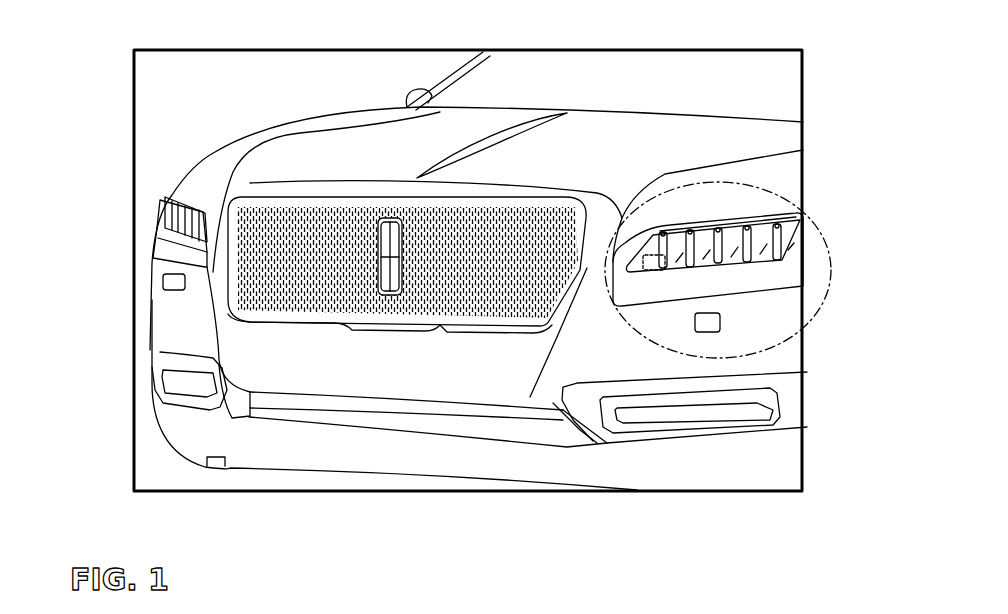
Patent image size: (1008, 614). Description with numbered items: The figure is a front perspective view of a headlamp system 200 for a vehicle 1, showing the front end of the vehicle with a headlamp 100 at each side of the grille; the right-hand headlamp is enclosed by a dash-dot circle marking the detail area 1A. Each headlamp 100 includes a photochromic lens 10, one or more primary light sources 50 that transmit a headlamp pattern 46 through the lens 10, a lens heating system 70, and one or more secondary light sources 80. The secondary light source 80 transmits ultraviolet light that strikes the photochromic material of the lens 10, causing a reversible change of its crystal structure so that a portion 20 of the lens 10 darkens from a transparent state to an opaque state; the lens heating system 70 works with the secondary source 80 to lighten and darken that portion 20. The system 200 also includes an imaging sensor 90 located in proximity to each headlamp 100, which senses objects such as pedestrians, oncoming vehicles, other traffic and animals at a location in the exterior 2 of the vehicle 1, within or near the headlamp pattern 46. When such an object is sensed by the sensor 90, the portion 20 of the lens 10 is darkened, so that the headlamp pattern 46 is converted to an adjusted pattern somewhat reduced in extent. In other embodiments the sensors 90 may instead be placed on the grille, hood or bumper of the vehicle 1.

The vehicle 1 is at (207, 148).
The exterior of the vehicle 2 is at (390, 173).
The photochromic lens 10 is at (745, 205).
The portion of the lens 20 is at (655, 269).
The headlamp pattern 46 is at (658, 278).
The primary light source 50 is at (700, 270).
The lens heating system 70 is at (790, 253).
The secondary light source 80 is at (686, 311).
The imaging sensor 90 is at (720, 334).
The headlamp 100 is at (147, 243).
The headlamp system 200 is at (742, 203).
The detail area 1A is at (830, 217).